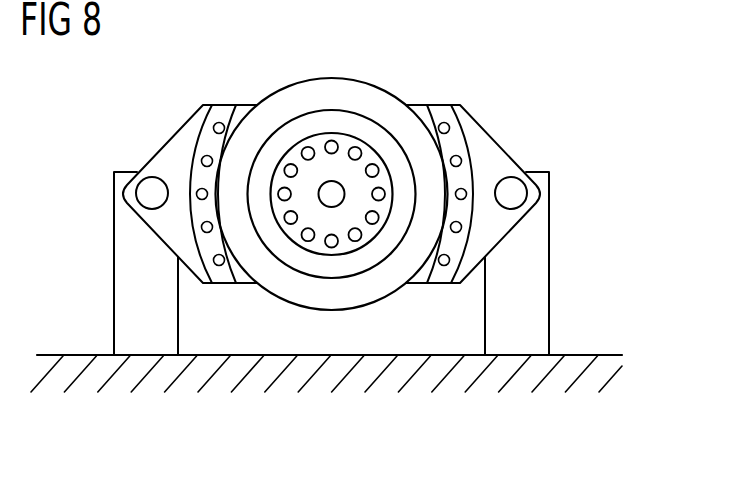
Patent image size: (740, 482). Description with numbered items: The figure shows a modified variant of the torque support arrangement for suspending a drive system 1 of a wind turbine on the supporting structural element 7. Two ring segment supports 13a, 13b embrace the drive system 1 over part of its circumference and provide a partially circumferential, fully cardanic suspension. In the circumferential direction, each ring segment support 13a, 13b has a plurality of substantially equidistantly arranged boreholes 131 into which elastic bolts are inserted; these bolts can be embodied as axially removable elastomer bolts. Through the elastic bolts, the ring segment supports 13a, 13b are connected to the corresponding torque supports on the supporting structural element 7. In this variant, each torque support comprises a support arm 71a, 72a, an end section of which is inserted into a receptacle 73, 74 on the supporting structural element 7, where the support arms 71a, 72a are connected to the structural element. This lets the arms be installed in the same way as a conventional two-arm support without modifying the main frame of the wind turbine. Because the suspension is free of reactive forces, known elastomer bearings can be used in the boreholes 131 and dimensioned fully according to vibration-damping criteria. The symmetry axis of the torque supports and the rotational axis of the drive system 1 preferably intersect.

The rotary machine / motor housing 1 is at (337, 99).
The supporting structural element 7 is at (390, 384).
The ring segment support 13a is at (238, 110).
The ring segment support 13b is at (425, 110).
The support arm 71a is at (165, 147).
The support arm 72a is at (498, 147).
The receptacle 73 is at (114, 298).
The receptacle 74 is at (549, 300).
The boreholes 131 is at (205, 226).